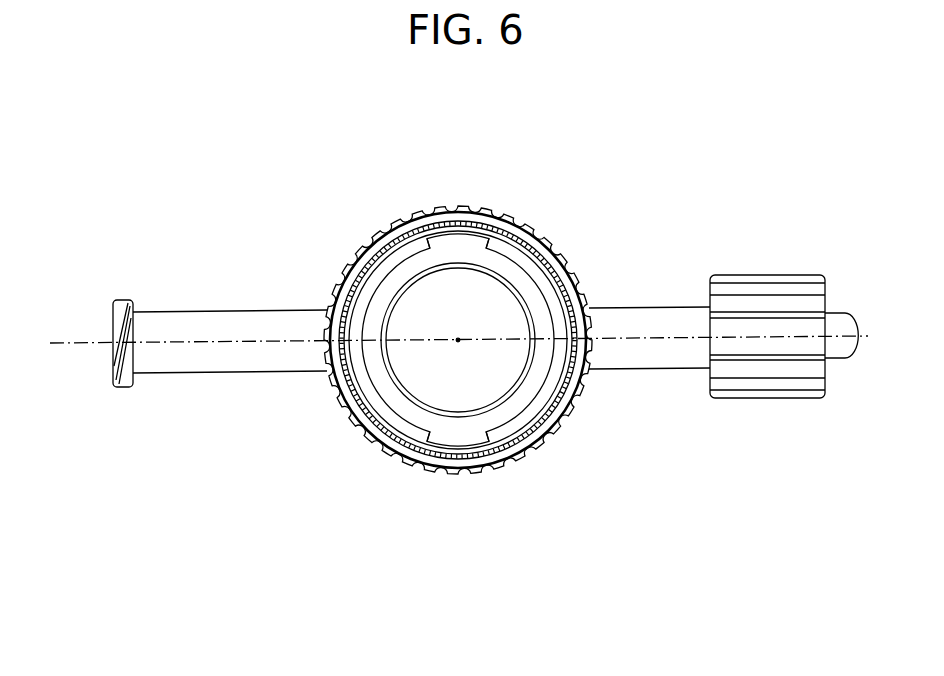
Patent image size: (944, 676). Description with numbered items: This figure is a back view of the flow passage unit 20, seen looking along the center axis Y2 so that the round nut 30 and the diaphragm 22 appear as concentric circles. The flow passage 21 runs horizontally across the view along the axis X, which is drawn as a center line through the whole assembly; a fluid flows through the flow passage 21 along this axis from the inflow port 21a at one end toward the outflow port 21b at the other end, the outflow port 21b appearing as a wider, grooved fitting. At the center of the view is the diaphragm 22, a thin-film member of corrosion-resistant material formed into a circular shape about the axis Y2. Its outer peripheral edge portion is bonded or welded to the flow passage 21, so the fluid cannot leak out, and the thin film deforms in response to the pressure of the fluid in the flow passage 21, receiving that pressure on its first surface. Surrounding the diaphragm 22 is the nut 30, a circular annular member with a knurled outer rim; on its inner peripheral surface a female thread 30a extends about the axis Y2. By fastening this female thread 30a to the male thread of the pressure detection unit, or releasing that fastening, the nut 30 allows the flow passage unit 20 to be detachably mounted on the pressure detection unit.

The flow passage unit 20 is at (258, 178).
The flow passage 21 is at (421, 340).
The inflow port 21a is at (125, 388).
The outflow port 21b is at (848, 362).
The diaphragm 22 is at (427, 392).
The nut 30 is at (332, 270).
The female thread 30a is at (508, 432).
The axis X is at (62, 345).
The axis Y2 is at (458, 338).